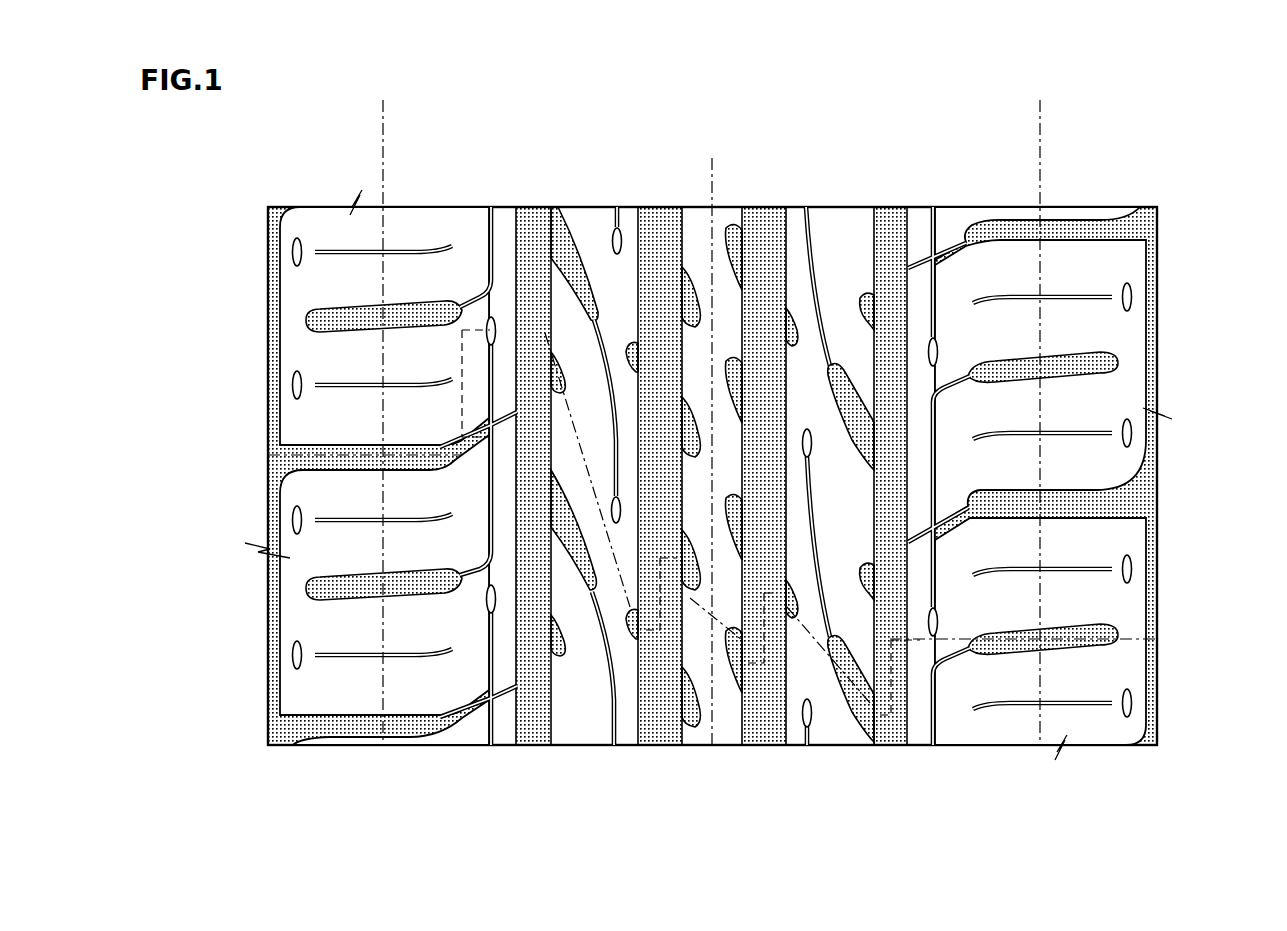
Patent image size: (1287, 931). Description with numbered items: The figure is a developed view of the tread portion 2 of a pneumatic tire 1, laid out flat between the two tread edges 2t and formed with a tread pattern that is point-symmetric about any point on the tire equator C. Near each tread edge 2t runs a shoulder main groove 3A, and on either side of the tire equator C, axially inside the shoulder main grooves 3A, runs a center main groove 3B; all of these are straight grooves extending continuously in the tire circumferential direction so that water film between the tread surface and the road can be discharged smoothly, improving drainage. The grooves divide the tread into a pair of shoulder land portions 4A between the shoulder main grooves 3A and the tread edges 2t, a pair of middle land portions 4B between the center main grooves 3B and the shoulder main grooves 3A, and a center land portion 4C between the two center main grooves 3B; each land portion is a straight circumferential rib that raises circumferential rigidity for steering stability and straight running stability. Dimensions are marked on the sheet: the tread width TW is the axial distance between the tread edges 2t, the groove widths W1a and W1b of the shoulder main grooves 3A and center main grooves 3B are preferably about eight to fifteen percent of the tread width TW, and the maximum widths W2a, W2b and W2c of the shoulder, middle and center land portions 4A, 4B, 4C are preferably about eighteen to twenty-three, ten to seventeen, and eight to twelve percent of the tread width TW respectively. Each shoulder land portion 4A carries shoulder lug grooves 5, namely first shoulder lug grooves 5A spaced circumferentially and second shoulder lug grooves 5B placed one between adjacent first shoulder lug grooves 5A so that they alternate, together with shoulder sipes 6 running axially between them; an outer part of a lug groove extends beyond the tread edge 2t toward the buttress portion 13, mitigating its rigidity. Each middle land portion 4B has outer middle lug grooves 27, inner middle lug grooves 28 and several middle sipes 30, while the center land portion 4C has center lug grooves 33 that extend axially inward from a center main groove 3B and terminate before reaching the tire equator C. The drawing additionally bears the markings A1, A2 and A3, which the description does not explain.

The pneumatic tire 1 is at (965, 192).
The tread portion 2 is at (452, 207).
The tread edge 2t is at (383, 168).
The shoulder main groove 3A is at (533, 245).
The center main groove 3B is at (660, 242).
The shoulder land portion 4A is at (468, 730).
The middle land portion 4B is at (595, 728).
The center land portion 4C is at (727, 718).
The shoulder lug groove 5 is at (335, 727).
The first shoulder lug groove 5A is at (1062, 500).
The second shoulder lug groove 5B is at (335, 587).
The shoulder sipe 6 is at (1062, 432).
The buttress portion 13 is at (305, 352).
The outer middle lug groove 27 is at (563, 255).
The inner middle lug groove 28 is at (628, 340).
The middle sipe 30 is at (816, 293).
The center lug groove 33 is at (735, 234).
The tire equator C is at (712, 441).
The tread width TW is at (383, 107).
The groove width of shoulder main groove W1a is at (487, 708).
The groove width of center main groove W1b is at (640, 653).
The maximum width of shoulder land portion W2a is at (907, 745).
The maximum axial width of middle land portion W2b is at (786, 745).
The maximum width of center land portion W2c is at (682, 745).
The section line A1 is at (268, 455).
The section line A2 is at (565, 289).
The section line A3 is at (1001, 528).